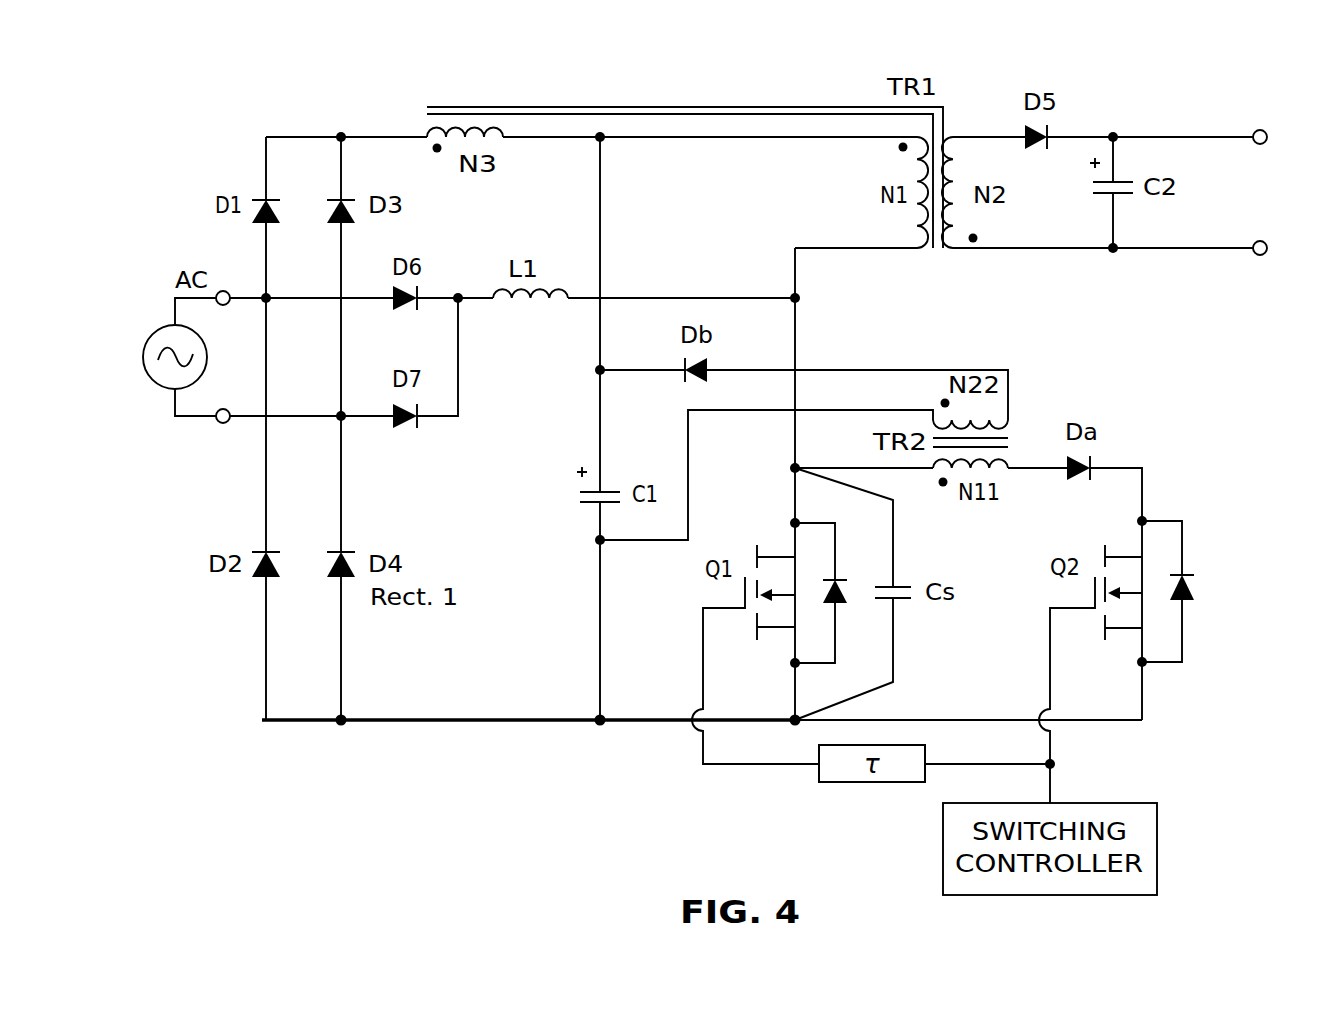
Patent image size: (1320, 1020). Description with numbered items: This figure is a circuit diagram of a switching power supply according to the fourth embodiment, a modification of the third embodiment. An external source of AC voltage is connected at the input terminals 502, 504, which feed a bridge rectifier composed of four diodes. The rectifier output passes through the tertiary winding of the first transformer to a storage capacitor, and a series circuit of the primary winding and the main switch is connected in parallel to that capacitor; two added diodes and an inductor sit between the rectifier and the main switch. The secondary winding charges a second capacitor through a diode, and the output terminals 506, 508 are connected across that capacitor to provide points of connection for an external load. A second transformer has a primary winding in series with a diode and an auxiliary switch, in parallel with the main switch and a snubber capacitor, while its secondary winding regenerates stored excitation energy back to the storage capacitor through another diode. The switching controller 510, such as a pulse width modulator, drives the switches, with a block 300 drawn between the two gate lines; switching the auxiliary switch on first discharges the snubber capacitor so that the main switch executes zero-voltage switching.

The terminal 502 is at (220, 292).
The terminal 504 is at (220, 425).
The output terminal 506 is at (1267, 126).
The output terminal 508 is at (1267, 258).
The delay circuit 300 is at (872, 782).
The switching controller 510 is at (1158, 842).